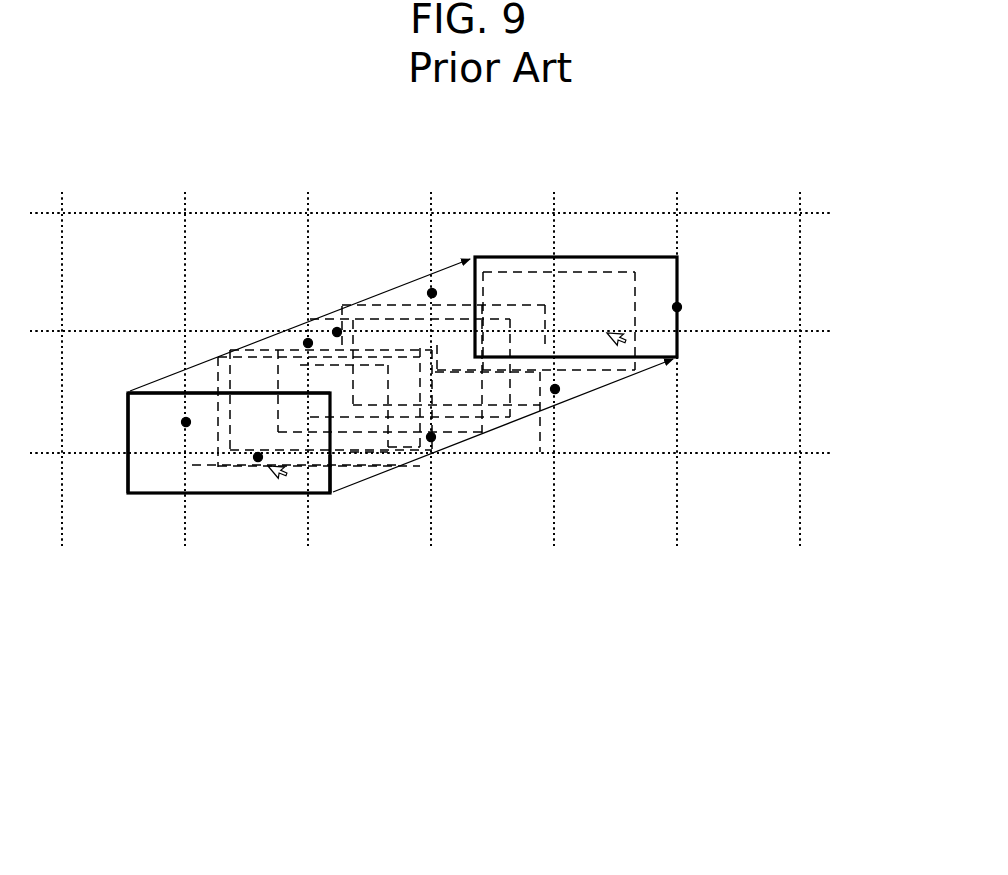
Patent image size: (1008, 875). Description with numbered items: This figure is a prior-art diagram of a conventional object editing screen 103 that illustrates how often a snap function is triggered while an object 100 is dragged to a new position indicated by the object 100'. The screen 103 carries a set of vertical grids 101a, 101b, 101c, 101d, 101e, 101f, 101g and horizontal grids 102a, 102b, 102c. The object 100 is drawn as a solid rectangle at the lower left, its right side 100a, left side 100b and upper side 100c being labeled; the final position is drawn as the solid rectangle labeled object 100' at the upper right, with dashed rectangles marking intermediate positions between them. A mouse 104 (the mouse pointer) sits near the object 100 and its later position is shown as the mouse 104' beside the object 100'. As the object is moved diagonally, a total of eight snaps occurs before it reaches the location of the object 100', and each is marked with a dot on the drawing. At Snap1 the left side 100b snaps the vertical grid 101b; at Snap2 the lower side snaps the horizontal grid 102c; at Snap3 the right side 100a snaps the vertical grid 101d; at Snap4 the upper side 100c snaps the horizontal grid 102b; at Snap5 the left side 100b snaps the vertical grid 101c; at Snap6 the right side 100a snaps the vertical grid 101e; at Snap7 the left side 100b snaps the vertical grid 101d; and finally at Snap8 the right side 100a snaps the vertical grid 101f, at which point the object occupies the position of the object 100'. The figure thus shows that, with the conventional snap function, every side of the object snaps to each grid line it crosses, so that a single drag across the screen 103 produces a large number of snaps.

The object 100 is at (229, 515).
The object at moved location 100' is at (594, 251).
The right side of object 100a is at (331, 470).
The left side of object 100b is at (127, 430).
The upper side of object 100c is at (208, 391).
The vertical grid 101a is at (64, 543).
The vertical grid 101b is at (187, 545).
The vertical grid 101c is at (308, 497).
The vertical grid 101d is at (433, 545).
The vertical grid 101e is at (556, 545).
The vertical grid 101f is at (679, 545).
The vertical grid 101g is at (802, 545).
The horizontal grid 102a is at (826, 214).
The horizontal grid 102b is at (828, 332).
The horizontal grid 102c is at (828, 454).
The screen 103 is at (410, 682).
The mouse 104 is at (339, 515).
The mouse at moved location 104' is at (683, 381).
The first snap Snap1 is at (178, 416).
The second snap Snap2 is at (252, 463).
The third snap Snap3 is at (442, 450).
The fourth snap Snap4 is at (333, 325).
The fifth snap Snap5 is at (305, 337).
The sixth snap Snap6 is at (562, 397).
The seventh snap Snap7 is at (428, 288).
The eighth snap Snap8 is at (683, 313).